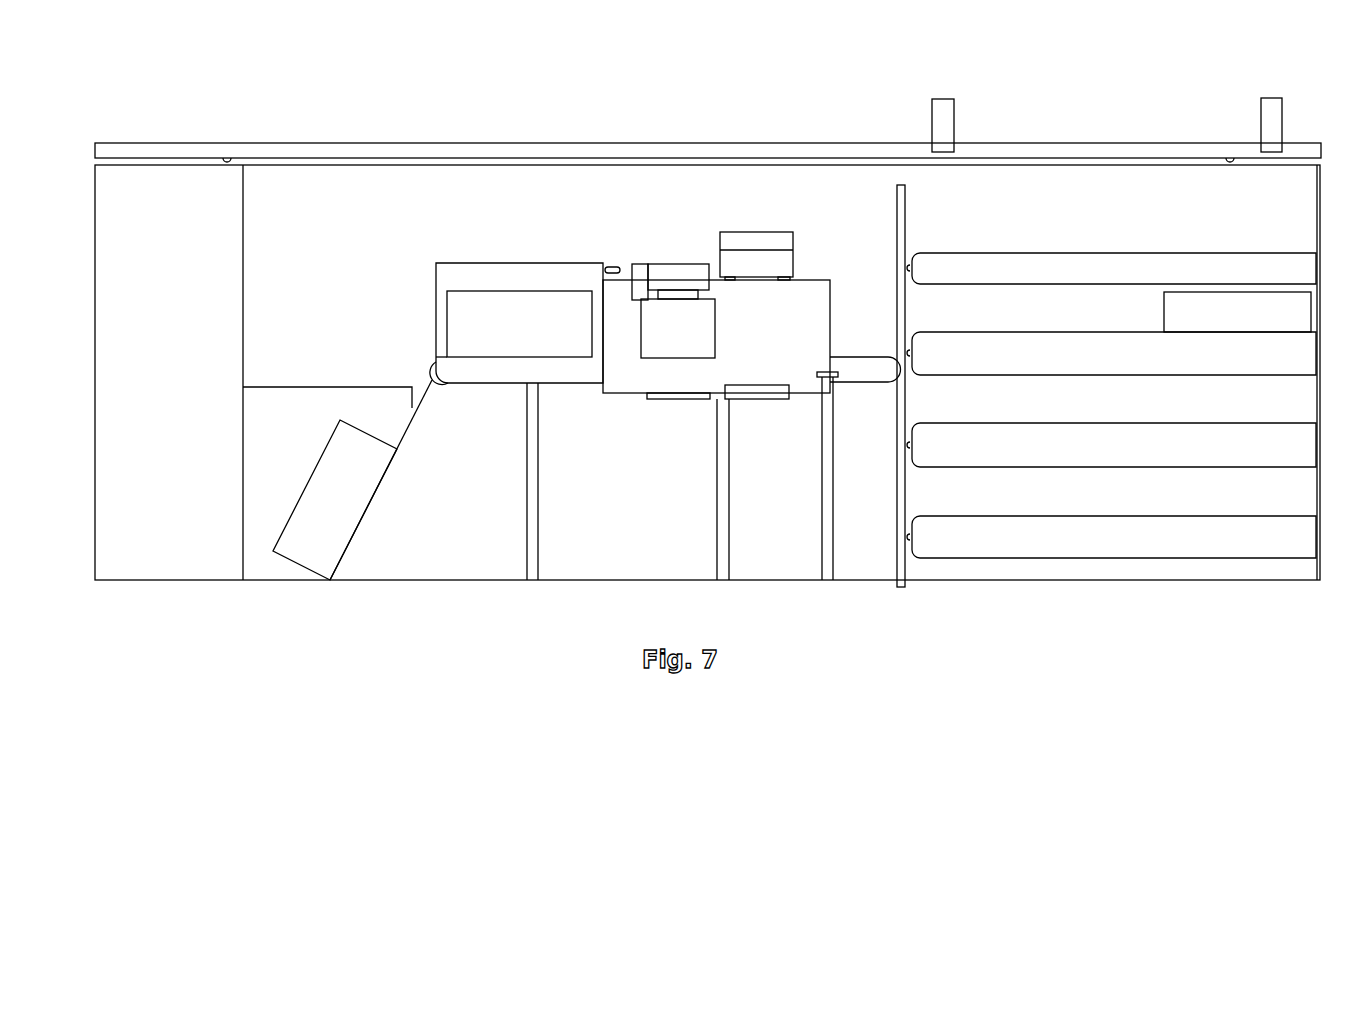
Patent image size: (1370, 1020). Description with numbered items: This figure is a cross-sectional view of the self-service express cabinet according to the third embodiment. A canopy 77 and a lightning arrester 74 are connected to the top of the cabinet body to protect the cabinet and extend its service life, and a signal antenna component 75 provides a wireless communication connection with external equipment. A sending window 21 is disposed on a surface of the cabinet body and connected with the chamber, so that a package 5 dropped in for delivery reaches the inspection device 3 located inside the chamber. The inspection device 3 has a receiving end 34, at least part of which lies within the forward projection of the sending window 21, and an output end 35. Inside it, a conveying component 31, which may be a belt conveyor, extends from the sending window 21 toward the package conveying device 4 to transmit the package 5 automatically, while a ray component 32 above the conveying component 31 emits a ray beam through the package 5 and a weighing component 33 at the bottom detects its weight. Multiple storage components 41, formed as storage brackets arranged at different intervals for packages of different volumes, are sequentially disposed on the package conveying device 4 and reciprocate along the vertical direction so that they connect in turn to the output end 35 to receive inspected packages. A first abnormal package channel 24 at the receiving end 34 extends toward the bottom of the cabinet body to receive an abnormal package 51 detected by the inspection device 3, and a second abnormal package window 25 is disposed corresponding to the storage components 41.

The canopy 77 is at (325, 157).
The signal antenna component 75 is at (948, 128).
The lightning arrester 74 is at (1273, 120).
The second abnormal package window 25 is at (313, 395).
The first abnormal package channel 24 is at (367, 520).
The abnormal package 51 is at (322, 528).
The sending window 21 is at (463, 279).
The package 5 is at (467, 333).
The receiving end 34 is at (432, 373).
The conveying component 31 is at (517, 377).
The inspection device 3 is at (806, 268).
The ray component 32 is at (677, 270).
The weighing component 33 is at (733, 395).
The output end 35 is at (900, 360).
The package conveying device 4 is at (1078, 251).
The storage component 41 is at (1150, 417).